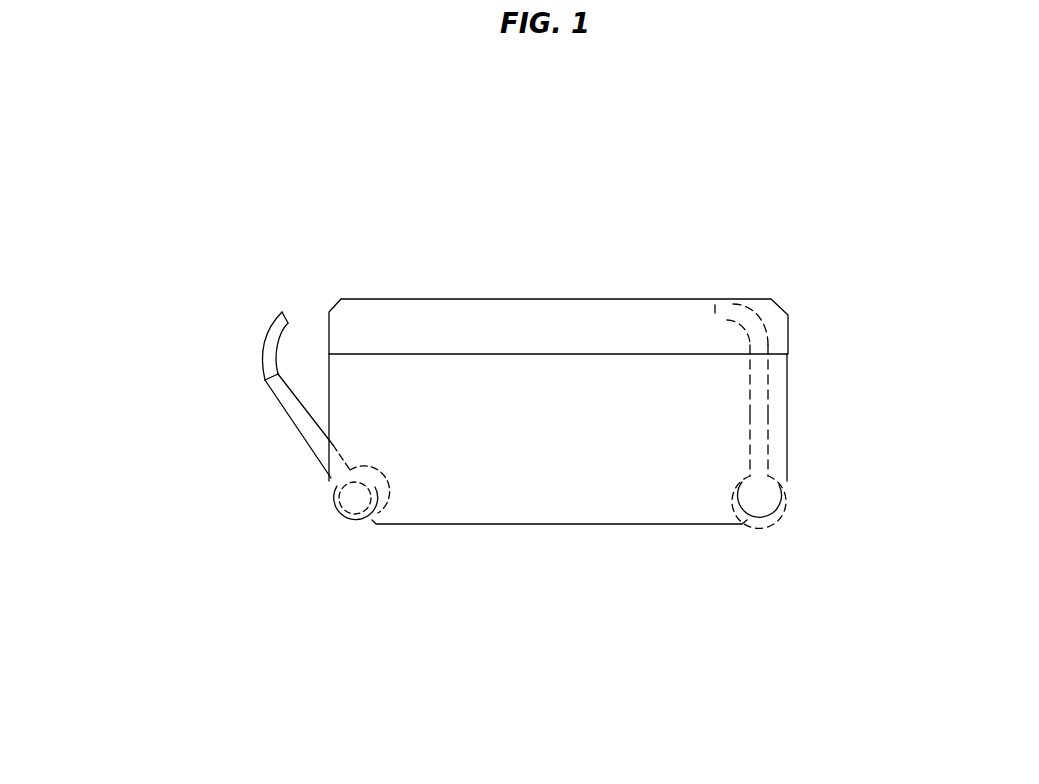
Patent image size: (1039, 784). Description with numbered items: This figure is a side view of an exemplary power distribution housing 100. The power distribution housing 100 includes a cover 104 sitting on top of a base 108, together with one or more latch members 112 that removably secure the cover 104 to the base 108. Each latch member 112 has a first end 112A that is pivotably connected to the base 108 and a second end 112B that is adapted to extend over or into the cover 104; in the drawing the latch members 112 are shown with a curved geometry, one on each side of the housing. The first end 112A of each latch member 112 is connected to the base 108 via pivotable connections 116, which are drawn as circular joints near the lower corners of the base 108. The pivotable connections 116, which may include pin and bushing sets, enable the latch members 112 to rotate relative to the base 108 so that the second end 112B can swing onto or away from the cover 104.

The power distribution housing 100 is at (353, 98).
The cover 104 is at (557, 298).
The base 108 is at (557, 524).
The latch members 112 is at (768, 415).
The first end 112A is at (755, 466).
The second end 112B is at (750, 360).
The pivotable connections 116 is at (759, 521).